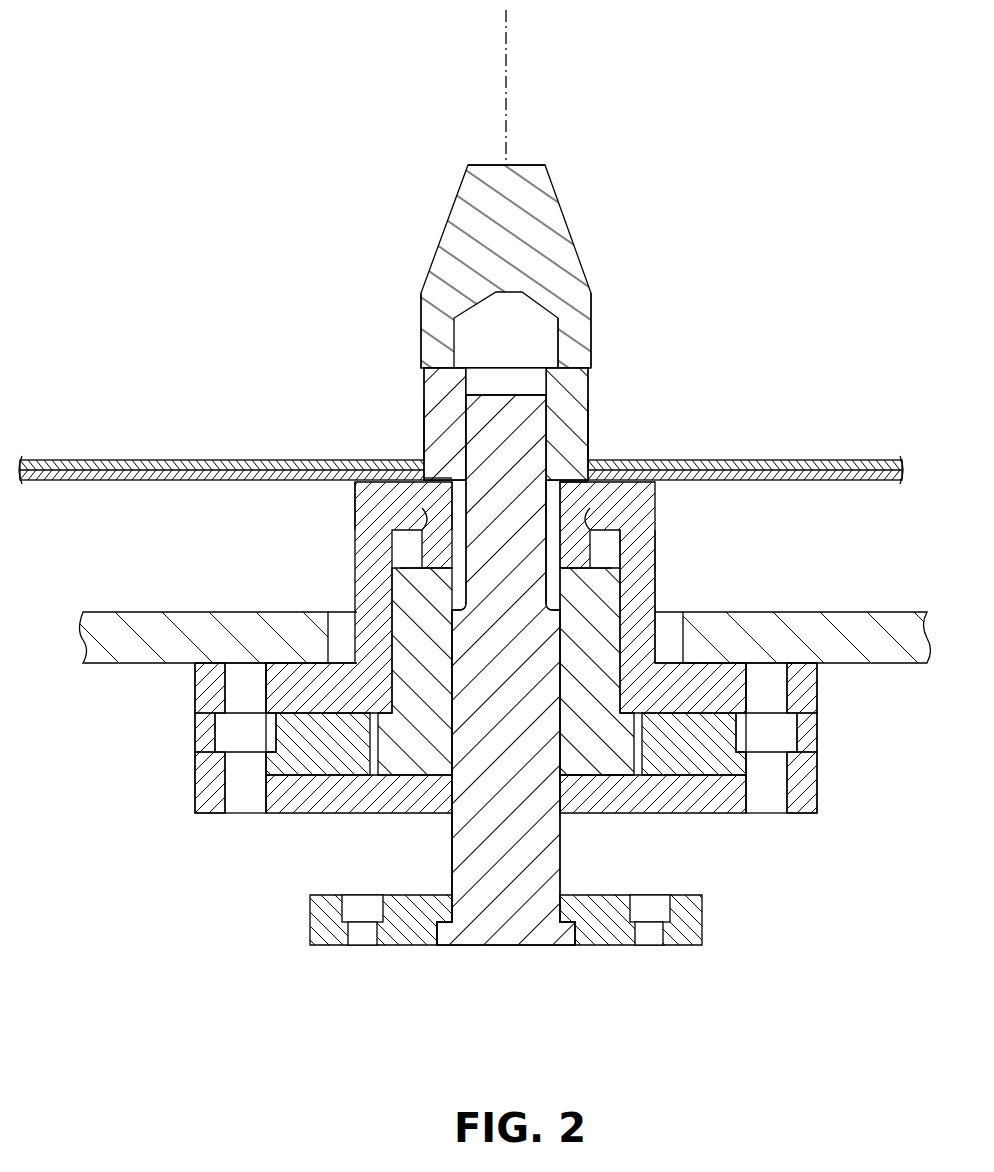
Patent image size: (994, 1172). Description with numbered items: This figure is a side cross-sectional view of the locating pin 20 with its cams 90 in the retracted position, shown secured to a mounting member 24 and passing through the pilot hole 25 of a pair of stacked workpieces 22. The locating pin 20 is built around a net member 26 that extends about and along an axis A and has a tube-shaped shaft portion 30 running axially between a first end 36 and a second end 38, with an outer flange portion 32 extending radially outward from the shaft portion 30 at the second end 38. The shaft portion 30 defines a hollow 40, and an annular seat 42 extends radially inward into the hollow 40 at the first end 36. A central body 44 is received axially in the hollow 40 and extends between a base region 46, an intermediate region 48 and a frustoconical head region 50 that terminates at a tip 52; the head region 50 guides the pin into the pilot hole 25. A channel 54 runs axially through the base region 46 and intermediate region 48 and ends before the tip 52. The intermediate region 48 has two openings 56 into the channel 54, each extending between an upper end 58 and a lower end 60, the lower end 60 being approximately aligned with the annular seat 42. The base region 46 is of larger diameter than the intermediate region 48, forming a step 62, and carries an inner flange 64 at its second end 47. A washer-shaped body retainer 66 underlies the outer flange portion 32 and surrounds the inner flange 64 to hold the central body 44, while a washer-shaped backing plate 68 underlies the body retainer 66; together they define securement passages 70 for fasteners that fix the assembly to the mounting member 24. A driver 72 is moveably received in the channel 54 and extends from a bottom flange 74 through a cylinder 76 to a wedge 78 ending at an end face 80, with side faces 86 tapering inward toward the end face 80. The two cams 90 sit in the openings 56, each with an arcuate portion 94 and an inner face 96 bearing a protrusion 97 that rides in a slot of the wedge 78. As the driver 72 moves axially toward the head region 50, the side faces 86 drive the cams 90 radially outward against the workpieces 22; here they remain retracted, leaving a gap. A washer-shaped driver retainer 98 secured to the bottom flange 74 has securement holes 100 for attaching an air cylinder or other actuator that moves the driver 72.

The locating pin 20 is at (300, 297).
The workpiece 22 is at (790, 462).
The mounting member 24 is at (136, 650).
The pilot hole 25 is at (588, 458).
The net member 26 is at (662, 514).
The shaft portion 30 is at (650, 540).
The outer flange portion 32 is at (718, 668).
The first end 36 is at (358, 485).
The second end 38 is at (372, 656).
The hollow 40 is at (357, 540).
The annular seat 42 is at (622, 505).
The central body 44 is at (606, 282).
The base region 46 is at (622, 770).
The second end 47 is at (352, 800).
The intermediate region 48 is at (430, 476).
The head region 50 is at (455, 210).
The tip 52 is at (532, 163).
The channel 54 is at (600, 778).
The opening 56 is at (592, 378).
The upper end 58 is at (420, 345).
The lower end 60 is at (452, 490).
The step 62 is at (548, 541).
The inner flange 64 is at (660, 790).
The body retainer 66 is at (824, 744).
The backing plate 68 is at (205, 818).
The securement passage 70 is at (245, 686).
The driver 72 is at (446, 838).
The bottom flange 74 is at (566, 908).
The cylinder 76 is at (462, 780).
The wedge 78 is at (596, 488).
The end face 80 is at (480, 365).
The side face 86 is at (455, 585).
The cam 90 is at (418, 386).
The arcuate portion 94 is at (424, 425).
The inner face 96 is at (520, 396).
The protrusion 97 is at (575, 335).
The driver retainer 98 is at (385, 950).
The securement hole 100 is at (665, 912).
The axis A is at (497, 76).